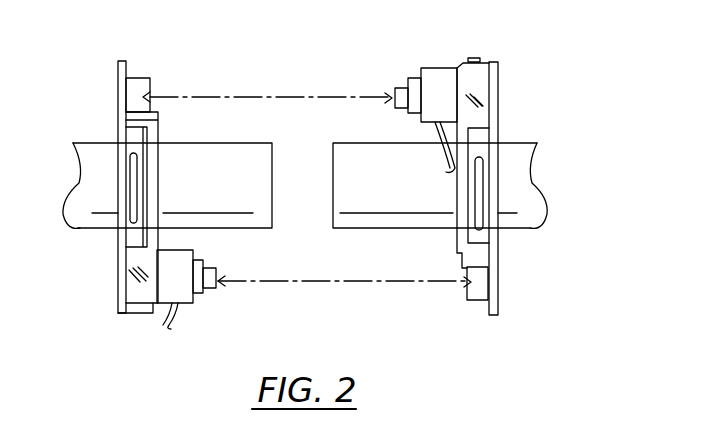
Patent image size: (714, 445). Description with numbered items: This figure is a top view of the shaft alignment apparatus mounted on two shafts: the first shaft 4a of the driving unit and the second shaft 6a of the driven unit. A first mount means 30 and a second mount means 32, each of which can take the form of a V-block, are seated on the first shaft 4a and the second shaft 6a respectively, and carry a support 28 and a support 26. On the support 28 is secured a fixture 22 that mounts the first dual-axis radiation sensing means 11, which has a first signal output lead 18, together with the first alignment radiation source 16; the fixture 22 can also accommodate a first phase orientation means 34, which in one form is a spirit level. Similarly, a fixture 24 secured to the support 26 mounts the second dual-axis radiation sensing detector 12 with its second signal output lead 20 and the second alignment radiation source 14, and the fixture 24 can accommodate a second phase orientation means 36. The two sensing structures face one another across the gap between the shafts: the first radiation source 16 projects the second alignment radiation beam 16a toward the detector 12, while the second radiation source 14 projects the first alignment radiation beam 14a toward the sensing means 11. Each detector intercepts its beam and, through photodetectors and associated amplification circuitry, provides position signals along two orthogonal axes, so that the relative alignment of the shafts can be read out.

The first shaft 4a is at (90, 142).
The second shaft 6a is at (510, 226).
The first dual-axis radiation sensing means 11 is at (197, 302).
The second dual-axis radiation sensing detector 12 is at (422, 68).
The second alignment radiation source 14 is at (480, 303).
The first alignment radiation beam 14a is at (366, 284).
The first alignment radiation source 16 is at (137, 79).
The second alignment radiation beam 16a is at (210, 97).
The first signal output lead 18 is at (174, 323).
The second signal output lead 20 is at (435, 123).
The fixture 22 is at (138, 285).
The fixture 24 is at (463, 77).
The support 26 is at (498, 87).
The support 28 is at (117, 77).
The first mount means 30 is at (137, 313).
The second mount means 32 is at (478, 58).
The first phase orientation means 34 is at (133, 240).
The second phase orientation means 36 is at (483, 135).